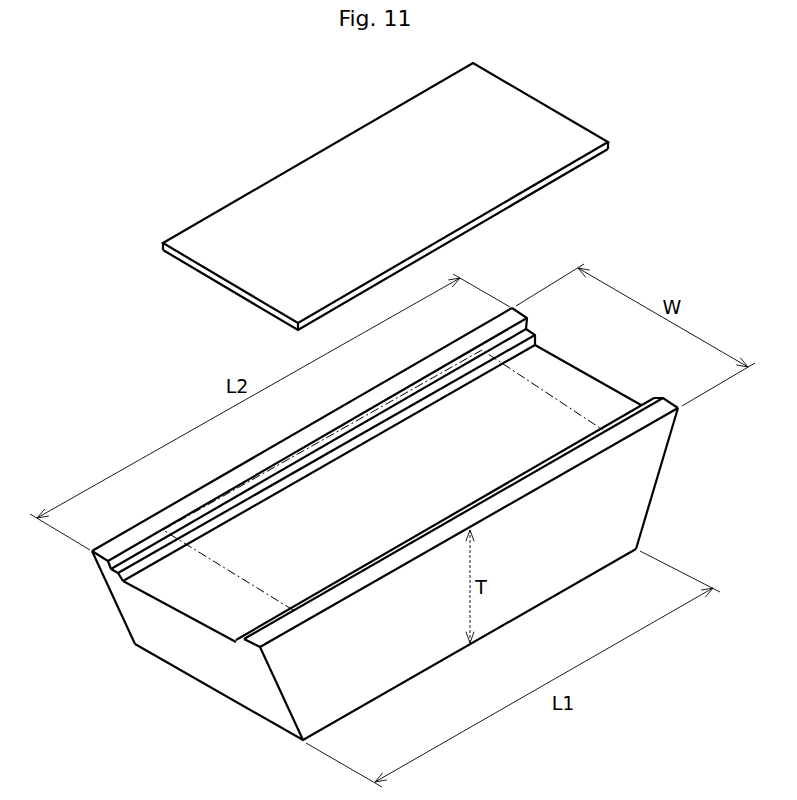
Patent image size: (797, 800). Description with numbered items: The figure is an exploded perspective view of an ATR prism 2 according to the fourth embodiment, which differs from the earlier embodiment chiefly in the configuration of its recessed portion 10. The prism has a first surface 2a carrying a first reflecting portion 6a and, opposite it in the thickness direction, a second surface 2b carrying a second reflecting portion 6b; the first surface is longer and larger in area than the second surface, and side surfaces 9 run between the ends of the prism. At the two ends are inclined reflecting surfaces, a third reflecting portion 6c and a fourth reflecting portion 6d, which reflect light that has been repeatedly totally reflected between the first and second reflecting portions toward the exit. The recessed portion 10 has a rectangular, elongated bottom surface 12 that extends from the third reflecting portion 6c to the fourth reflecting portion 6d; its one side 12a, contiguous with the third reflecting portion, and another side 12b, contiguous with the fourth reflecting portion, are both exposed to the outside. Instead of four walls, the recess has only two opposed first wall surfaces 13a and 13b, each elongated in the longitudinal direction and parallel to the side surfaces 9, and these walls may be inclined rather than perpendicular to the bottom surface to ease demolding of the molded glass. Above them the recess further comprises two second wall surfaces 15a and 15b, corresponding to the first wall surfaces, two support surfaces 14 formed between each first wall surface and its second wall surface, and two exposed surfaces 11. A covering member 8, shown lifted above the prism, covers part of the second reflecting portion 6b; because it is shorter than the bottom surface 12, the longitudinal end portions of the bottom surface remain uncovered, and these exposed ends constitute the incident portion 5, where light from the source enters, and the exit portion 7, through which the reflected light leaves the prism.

The ATR prism 2 is at (718, 224).
The first surface 2a is at (423, 675).
The second surface 2b is at (343, 586).
The incident portion 5 is at (185, 593).
The first reflecting portion 6a is at (524, 618).
The second reflecting portion 6b is at (375, 471).
The third reflecting portion 6c is at (150, 596).
The fourth reflecting portion 6d is at (654, 515).
The exit portion 7 is at (569, 385).
The covering member 8 is at (257, 185).
The side surfaces 9 is at (632, 483).
The recessed portion 10 is at (624, 436).
The exposed surfaces 11 is at (646, 415).
The bottom surface 12 is at (362, 531).
The one side 12a is at (190, 616).
The another side 12b is at (603, 381).
The first wall surface 13a is at (154, 629).
The first wall surface 13b is at (232, 641).
The support surfaces 14 is at (254, 493).
The second wall surface 15a is at (124, 579).
The second wall surface 15b is at (245, 642).